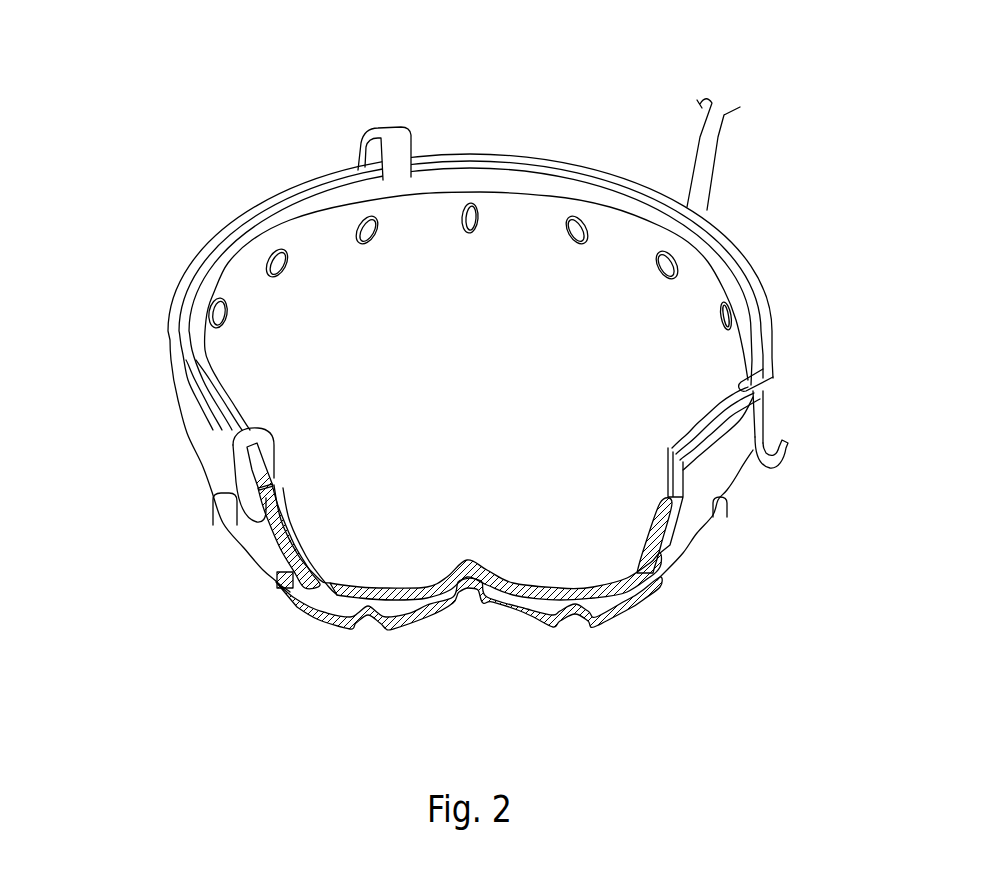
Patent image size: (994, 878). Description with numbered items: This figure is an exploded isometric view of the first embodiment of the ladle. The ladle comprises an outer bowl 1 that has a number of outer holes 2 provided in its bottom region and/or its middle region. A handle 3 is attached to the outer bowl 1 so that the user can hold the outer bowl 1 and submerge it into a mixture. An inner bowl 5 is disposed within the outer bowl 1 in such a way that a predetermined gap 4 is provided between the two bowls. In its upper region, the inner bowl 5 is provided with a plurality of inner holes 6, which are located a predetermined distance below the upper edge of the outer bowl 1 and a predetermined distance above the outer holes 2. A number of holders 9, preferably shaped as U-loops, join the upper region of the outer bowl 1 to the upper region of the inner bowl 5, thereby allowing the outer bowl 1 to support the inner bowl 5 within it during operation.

The outer bowl 1 is at (695, 527).
The outer holes 2 is at (287, 584).
The handle 3 is at (730, 137).
The gap 4 is at (316, 588).
The inner bowl 5 is at (410, 548).
The inner holes 6 is at (363, 220).
The holders 9 is at (243, 447).